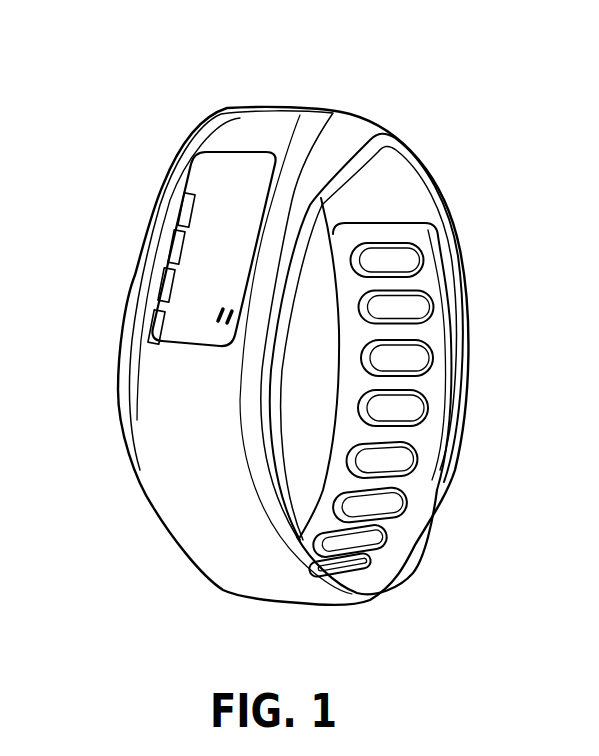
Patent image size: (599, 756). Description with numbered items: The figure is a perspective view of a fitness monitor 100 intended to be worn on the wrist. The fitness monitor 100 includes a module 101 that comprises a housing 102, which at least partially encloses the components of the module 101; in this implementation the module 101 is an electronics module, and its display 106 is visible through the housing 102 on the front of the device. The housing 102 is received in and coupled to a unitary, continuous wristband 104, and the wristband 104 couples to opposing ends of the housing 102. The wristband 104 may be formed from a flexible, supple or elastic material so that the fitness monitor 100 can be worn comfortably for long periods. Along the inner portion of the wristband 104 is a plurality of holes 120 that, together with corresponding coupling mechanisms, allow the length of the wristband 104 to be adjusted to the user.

The fitness monitor 100 is at (122, 110).
The module 101 is at (142, 211).
The housing 102 is at (148, 184).
The unitary wristband 104 is at (225, 577).
The display 106 is at (192, 165).
The holes 120 is at (370, 462).